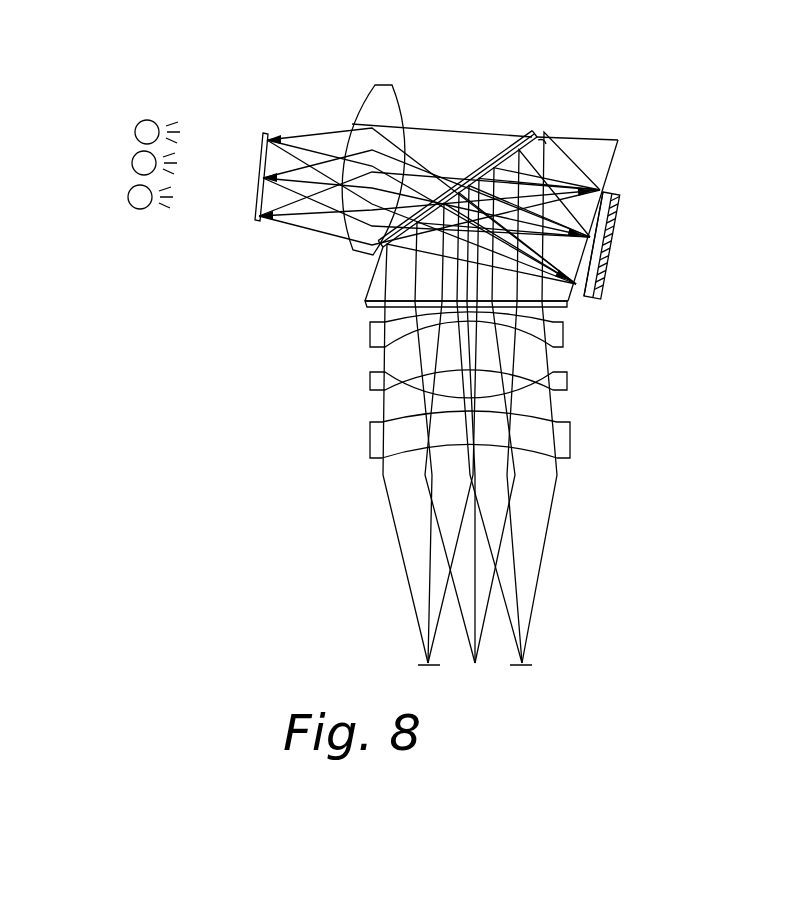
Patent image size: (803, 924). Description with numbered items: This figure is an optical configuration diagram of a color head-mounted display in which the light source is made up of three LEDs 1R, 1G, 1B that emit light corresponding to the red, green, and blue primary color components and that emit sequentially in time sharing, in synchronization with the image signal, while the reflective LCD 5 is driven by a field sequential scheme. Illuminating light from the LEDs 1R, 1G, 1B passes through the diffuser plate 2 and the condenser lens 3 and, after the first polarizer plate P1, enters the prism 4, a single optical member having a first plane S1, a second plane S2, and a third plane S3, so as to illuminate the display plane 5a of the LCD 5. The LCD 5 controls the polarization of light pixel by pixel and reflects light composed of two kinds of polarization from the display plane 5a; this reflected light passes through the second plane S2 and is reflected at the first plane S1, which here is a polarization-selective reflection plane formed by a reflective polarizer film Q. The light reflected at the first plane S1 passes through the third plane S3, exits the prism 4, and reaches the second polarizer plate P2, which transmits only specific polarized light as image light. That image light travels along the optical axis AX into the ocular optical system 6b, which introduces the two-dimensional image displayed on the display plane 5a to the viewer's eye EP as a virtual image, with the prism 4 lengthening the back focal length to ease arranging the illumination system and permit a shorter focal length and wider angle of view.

The LED 1R is at (135, 132).
The LED 1G is at (132, 164).
The LED 1B is at (128, 197).
The diffuser plate 2 is at (263, 134).
The condenser lens 3 is at (353, 112).
The prism 4 is at (492, 180).
The reflective LCD 5 is at (610, 244).
The display plane 5a is at (595, 222).
The ocular optical system 6b is at (330, 313).
The first polarizer plate P1 is at (518, 143).
The second polarizer plate P2 is at (568, 306).
The reflective polarizer film Q is at (538, 140).
The first plane S1 is at (546, 138).
The second plane S2 is at (617, 165).
The third plane S3 is at (365, 300).
The optical axis AX is at (474, 613).
The viewer's eye EP is at (542, 667).